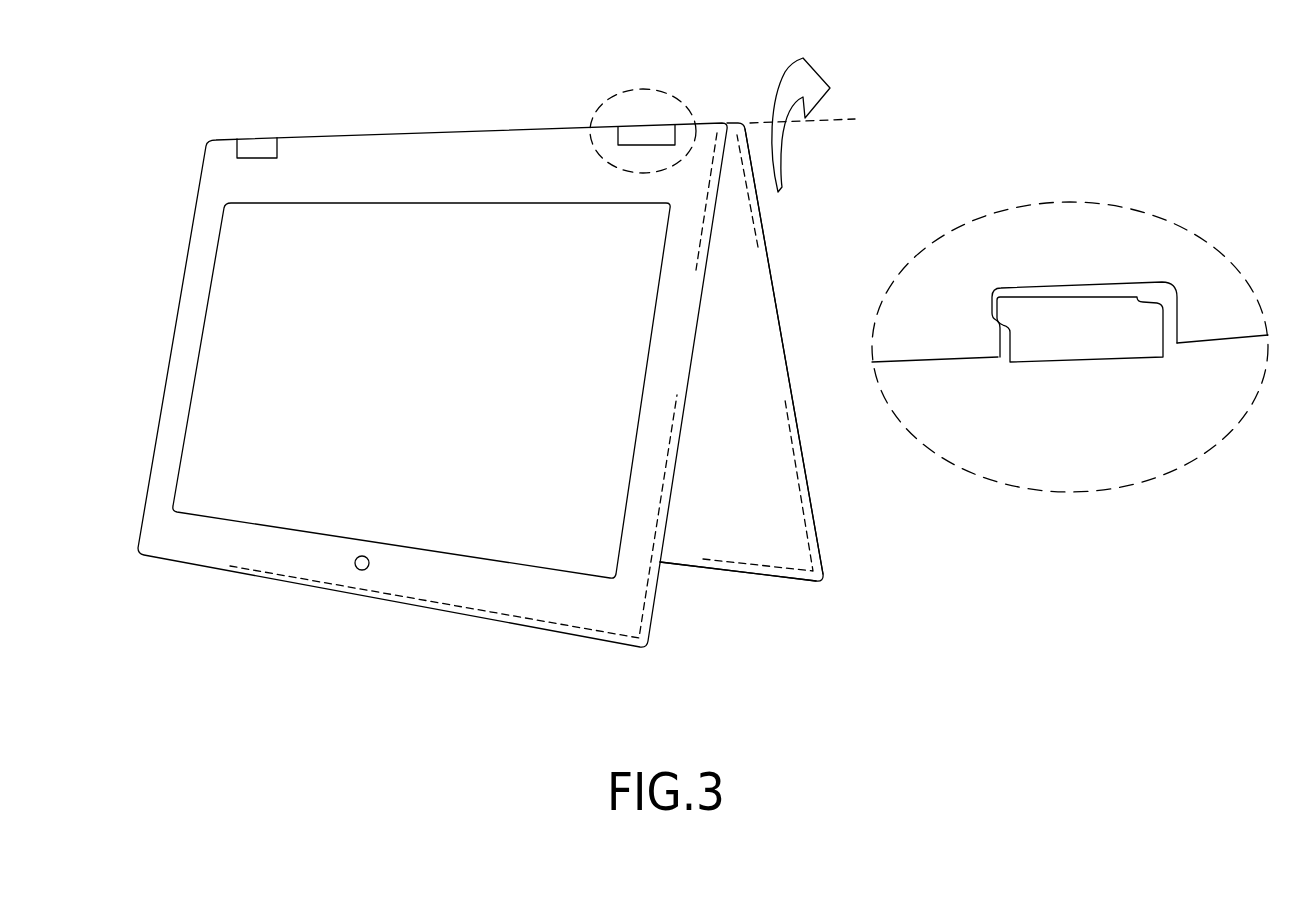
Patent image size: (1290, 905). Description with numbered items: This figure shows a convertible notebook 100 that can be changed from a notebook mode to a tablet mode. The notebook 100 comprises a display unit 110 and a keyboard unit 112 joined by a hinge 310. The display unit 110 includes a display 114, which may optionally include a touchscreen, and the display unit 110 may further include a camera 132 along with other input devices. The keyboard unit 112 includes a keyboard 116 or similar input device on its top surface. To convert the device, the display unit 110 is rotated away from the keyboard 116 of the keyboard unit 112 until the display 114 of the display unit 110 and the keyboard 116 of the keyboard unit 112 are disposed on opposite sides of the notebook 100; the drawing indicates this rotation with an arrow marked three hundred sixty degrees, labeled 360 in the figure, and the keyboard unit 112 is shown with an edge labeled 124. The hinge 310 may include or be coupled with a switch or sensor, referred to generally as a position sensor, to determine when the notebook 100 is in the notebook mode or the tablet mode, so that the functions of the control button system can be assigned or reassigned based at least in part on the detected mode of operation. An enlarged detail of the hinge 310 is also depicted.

The notebook 100 is at (490, 428).
The display unit 110 is at (155, 452).
The keyboard unit 112 is at (824, 564).
The display 114 is at (292, 418).
The keyboard 116 is at (807, 475).
The bottom edge of base portion 124 is at (735, 576).
The camera 132 is at (351, 569).
The hinge 310 is at (648, 90).
The 360 degree rotation indicator 360 is at (242, 137).